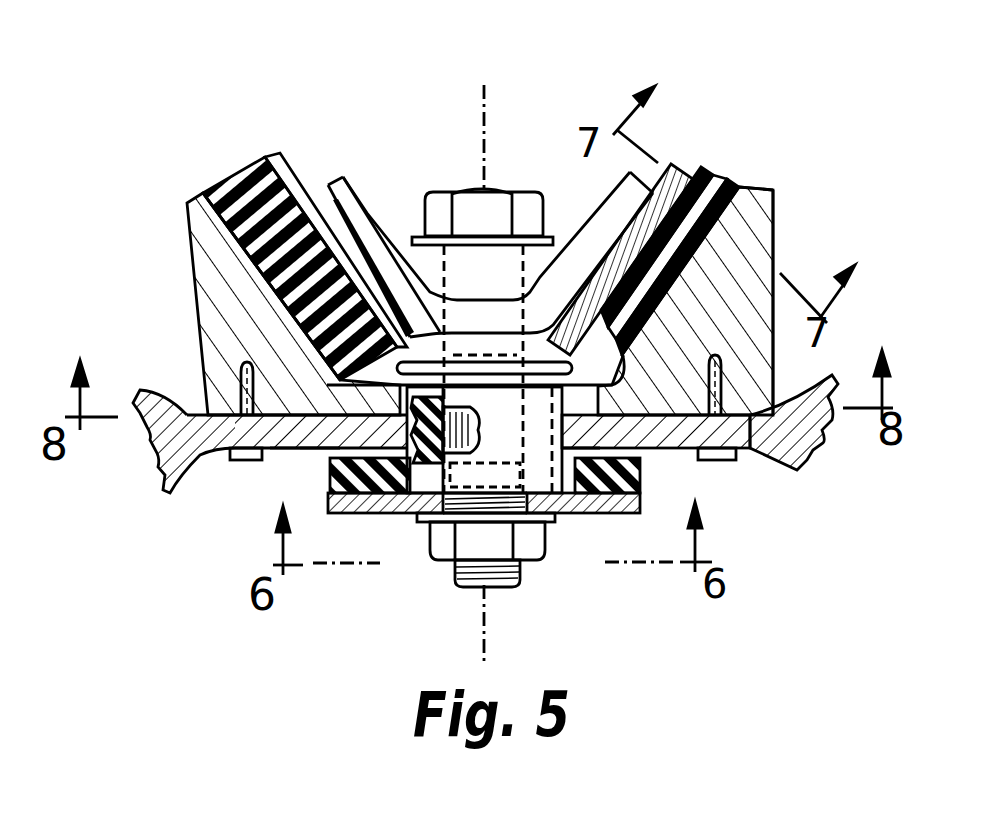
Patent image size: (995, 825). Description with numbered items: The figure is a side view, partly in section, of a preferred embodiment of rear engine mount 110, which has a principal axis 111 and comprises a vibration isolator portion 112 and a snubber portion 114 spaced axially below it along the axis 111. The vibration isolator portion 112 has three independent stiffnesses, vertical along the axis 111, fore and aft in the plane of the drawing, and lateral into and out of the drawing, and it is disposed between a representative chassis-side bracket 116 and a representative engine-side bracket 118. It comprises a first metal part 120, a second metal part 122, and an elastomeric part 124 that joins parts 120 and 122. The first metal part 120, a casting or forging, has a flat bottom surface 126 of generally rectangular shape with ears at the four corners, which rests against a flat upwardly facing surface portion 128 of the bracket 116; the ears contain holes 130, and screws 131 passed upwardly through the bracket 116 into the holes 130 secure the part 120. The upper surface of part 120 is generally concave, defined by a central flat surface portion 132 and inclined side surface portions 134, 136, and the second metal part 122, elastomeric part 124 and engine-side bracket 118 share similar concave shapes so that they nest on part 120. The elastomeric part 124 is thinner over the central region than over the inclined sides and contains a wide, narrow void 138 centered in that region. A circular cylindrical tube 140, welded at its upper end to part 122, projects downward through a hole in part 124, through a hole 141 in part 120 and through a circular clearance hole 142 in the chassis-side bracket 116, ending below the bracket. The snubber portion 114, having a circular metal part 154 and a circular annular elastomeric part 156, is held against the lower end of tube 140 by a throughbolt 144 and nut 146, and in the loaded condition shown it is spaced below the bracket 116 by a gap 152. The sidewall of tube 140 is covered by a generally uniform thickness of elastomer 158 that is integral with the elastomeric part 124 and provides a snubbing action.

The rear engine mount 110 is at (165, 240).
The principal axis 111 is at (495, 142).
The vibration isolator portion 112 is at (773, 192).
The snubber portion 114 is at (325, 513).
The chassis-side bracket 116 is at (810, 449).
The engine-side bracket 118 is at (330, 178).
The first metal part 120 is at (773, 262).
The second metal part 122 is at (682, 158).
The elastomeric part 124 is at (738, 188).
The flat bottom surface 126 is at (283, 462).
The flat upwardly facing surface portion 128 is at (243, 355).
The holes 130 is at (245, 368).
The screws 131 is at (240, 467).
The central flat surface portion 132 is at (318, 450).
The side surface portion 134 is at (700, 290).
The side surface portion 136 is at (250, 262).
The void 138 is at (388, 283).
The tube 140 is at (409, 495).
The hole 141 is at (596, 392).
The circular clearance hole 142 is at (570, 446).
The throughbolt 144 is at (500, 192).
The nut 146 is at (532, 563).
The gap 152 is at (648, 452).
The circular metal part 154 is at (393, 515).
The circular annular elastomeric part 156 is at (601, 495).
The elastomer 158 is at (407, 431).